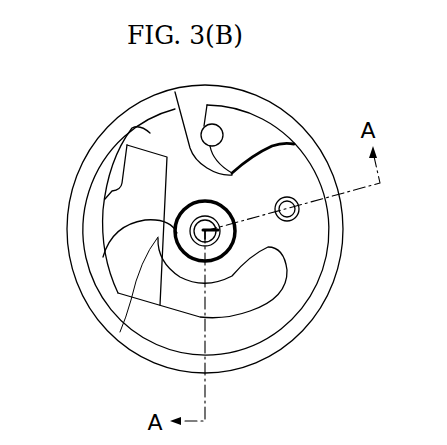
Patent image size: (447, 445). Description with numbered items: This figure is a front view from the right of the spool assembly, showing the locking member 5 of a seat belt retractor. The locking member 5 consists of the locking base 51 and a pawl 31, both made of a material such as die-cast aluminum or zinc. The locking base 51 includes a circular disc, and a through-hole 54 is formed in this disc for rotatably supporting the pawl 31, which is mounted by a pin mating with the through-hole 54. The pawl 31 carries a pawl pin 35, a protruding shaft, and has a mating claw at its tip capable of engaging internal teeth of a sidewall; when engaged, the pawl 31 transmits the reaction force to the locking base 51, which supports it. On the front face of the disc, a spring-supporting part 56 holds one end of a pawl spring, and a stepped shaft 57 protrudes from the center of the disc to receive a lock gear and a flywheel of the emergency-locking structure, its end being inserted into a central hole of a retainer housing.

The locking member 5 is at (133, 108).
The locking base 51 is at (132, 128).
The pawl 31 is at (243, 133).
The pawl pin 35 is at (213, 129).
The through-hole 54 is at (290, 221).
The spring-supporting part 56 is at (105, 255).
The stepped shaft 57 is at (120, 332).